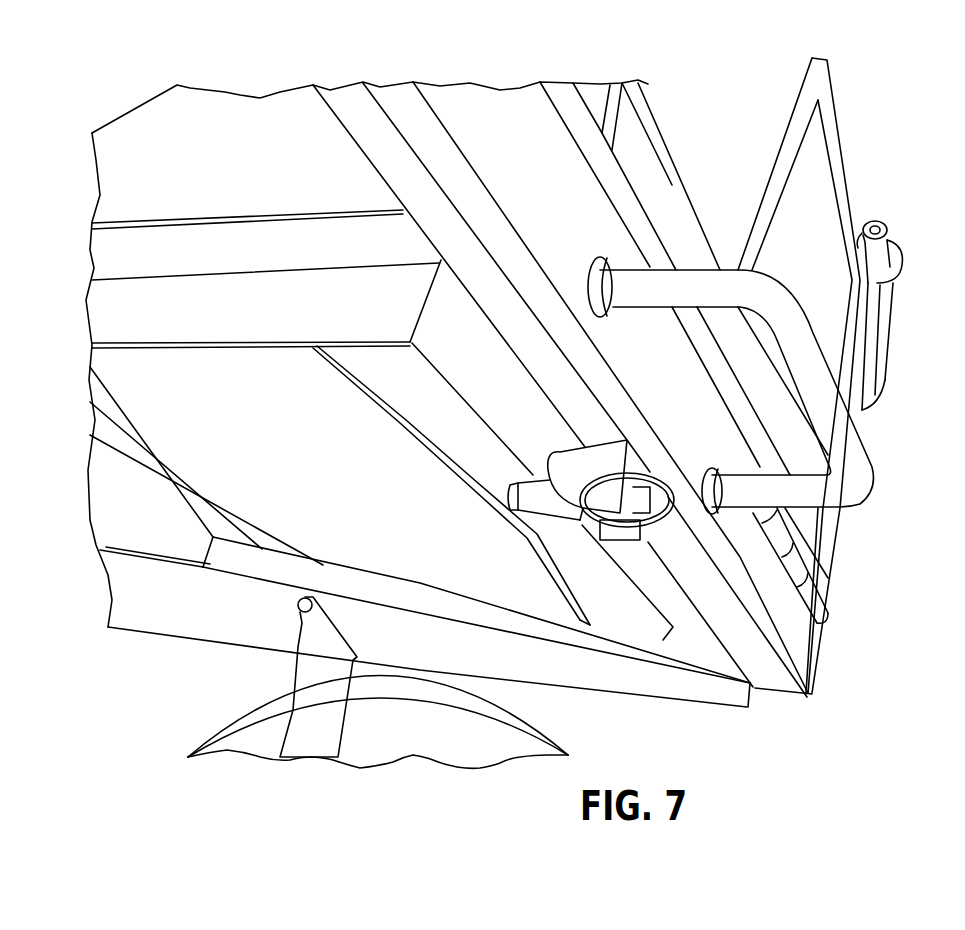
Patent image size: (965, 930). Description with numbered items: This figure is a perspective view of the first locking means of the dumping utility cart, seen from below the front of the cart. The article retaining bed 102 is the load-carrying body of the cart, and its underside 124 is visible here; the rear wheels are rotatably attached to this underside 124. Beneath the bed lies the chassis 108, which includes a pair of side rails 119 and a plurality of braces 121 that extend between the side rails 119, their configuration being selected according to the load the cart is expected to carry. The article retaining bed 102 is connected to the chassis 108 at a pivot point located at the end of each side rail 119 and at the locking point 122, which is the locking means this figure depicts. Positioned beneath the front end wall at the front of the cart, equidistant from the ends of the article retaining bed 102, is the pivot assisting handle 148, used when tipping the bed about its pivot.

The article retaining bed 102 is at (515, 105).
The chassis 108 is at (663, 677).
The side rails 119 is at (103, 262).
The braces 121 is at (545, 538).
The locking point 122 is at (668, 530).
The underside 124 is at (245, 120).
The pivot assisting handle 148 is at (853, 450).